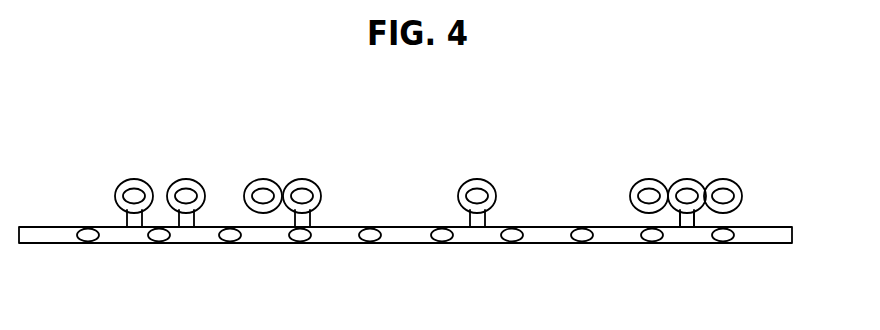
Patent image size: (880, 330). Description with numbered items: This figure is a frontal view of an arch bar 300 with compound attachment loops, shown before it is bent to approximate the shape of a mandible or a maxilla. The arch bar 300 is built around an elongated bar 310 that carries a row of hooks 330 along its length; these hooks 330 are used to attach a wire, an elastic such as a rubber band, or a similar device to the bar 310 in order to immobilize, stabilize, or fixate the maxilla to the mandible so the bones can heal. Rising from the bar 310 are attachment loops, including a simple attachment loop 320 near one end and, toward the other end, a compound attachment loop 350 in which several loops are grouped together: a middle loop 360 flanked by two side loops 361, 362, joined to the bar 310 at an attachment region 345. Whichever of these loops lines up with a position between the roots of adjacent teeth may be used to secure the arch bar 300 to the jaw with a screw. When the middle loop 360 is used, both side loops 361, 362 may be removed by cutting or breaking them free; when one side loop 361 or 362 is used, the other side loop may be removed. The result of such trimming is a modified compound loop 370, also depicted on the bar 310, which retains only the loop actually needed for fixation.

The arch bar 300 is at (410, 272).
The bar 310 is at (63, 236).
The ring element with stem 320 is at (131, 179).
The hooks 330 is at (232, 236).
The stem joint 345 is at (694, 226).
The compound attachment loop 350 is at (687, 174).
The middle loop 360 is at (697, 183).
The side loop 361 is at (640, 182).
The side loop 362 is at (728, 185).
The modified compound loop 370 is at (302, 192).